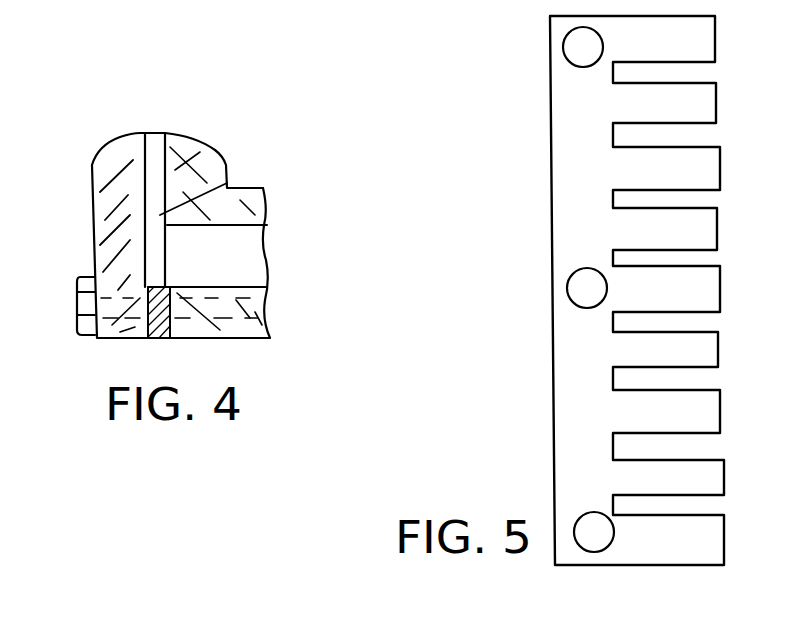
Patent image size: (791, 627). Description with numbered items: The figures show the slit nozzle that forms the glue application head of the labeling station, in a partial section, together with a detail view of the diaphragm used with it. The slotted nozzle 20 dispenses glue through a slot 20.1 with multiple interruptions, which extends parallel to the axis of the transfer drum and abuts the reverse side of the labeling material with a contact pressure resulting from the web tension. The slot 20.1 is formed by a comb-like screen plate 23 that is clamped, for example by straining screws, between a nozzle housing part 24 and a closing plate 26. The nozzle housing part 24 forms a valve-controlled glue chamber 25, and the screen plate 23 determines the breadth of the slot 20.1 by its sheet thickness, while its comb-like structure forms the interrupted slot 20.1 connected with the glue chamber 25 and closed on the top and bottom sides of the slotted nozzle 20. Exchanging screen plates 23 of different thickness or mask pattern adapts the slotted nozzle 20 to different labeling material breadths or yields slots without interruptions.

In FIG. 4, the slotted nozzle 20 is at (247, 140).
In FIG. 4, the slot with multiple interruptions 20.1 is at (157, 130).
In FIG. 4, the comb-like screen plate 23 is at (227, 183).
In FIG. 5, the comb-like screen plate 23 is at (573, 183).
In FIG. 4, the nozzle housing part 24 is at (250, 217).
In FIG. 4, the glue chamber 25 is at (240, 263).
In FIG. 4, the closing plate 26 is at (108, 213).